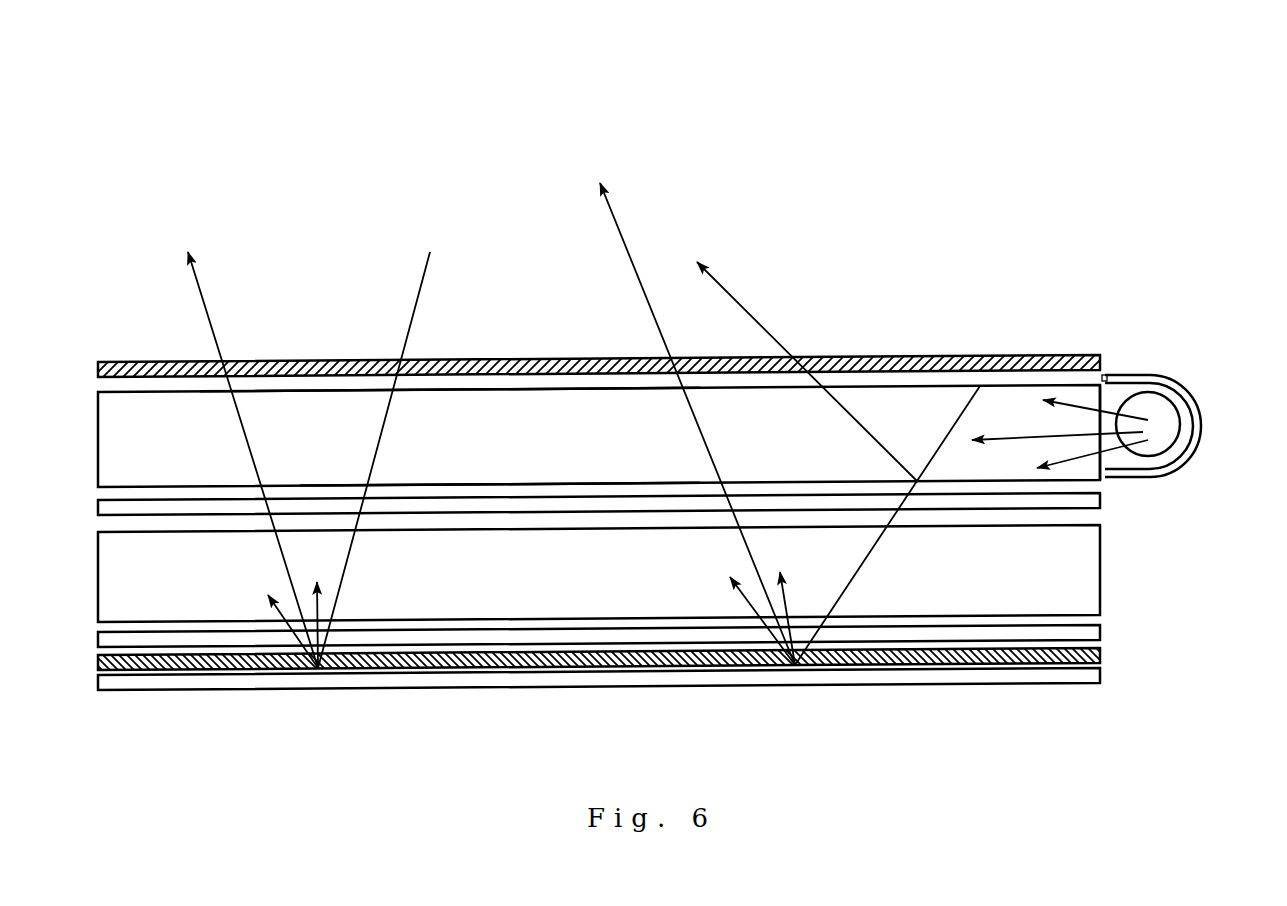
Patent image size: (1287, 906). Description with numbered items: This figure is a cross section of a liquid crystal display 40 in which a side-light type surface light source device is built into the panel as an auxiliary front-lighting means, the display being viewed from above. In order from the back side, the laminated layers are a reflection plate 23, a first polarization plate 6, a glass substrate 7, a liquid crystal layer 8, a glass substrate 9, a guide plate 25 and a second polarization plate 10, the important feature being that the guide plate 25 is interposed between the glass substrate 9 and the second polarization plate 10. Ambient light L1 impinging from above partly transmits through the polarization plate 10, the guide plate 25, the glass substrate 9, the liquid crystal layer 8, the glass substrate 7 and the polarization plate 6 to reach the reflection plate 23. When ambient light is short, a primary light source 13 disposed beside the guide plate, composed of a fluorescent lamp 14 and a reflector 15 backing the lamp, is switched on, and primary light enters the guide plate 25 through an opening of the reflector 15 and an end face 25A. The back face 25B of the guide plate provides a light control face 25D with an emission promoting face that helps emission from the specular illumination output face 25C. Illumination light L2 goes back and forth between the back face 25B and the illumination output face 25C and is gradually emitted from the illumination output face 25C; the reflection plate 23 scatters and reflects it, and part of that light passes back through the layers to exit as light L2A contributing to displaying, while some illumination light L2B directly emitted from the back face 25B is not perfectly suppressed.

The liquid crystal display 40 is at (128, 49).
The second polarization plate 10 is at (599, 317).
The guide plate 25 is at (596, 384).
The end face 25A is at (1129, 365).
The back face 25B is at (330, 333).
The illumination output face 25C is at (500, 543).
The light control face 25D is at (578, 332).
The glass substrate 9 is at (646, 515).
The liquid crystal layer 8 is at (646, 573).
The glass substrate 7 is at (646, 630).
The first polarization plate 6 is at (646, 672).
The reflection plate 23 is at (599, 718).
The primary light source 13 is at (1195, 381).
The fluorescent lamp 14 is at (1201, 395).
The reflector 15 is at (1194, 446).
The ambient light L1 is at (371, 459).
The illumination light L2 is at (1057, 374).
The light contributing to displaying L2A is at (697, 420).
The directly emitted illumination light L2B is at (807, 371).